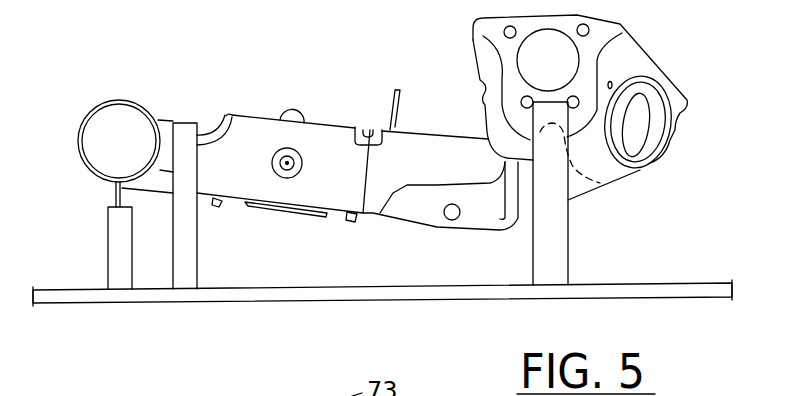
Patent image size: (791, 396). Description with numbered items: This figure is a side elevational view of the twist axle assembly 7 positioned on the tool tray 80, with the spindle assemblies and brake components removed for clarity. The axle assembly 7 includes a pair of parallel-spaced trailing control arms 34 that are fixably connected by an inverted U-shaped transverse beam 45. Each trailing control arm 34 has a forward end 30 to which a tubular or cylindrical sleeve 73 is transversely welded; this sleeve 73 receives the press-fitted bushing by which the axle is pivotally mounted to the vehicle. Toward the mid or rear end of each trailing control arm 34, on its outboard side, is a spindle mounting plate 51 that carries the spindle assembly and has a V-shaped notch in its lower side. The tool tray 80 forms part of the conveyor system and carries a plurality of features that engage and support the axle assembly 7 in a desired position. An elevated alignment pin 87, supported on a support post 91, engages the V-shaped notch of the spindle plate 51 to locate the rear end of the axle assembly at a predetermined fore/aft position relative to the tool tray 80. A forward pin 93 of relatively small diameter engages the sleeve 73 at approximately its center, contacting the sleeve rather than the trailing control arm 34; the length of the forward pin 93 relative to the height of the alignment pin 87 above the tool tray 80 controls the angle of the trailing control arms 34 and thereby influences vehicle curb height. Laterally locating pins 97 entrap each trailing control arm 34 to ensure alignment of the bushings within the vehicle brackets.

The twist axle 7 is at (272, 100).
The forward end 30 is at (163, 122).
The trailing control arm 34 is at (312, 198).
The transverse beam 45 is at (295, 120).
The spindle mounting plate 51 is at (605, 33).
The cylindrical sleeve 73 is at (117, 100).
The tool tray 80 is at (668, 283).
The alignment pin 87 is at (615, 188).
The support post 91 is at (567, 238).
The forward pin 93 is at (117, 192).
The laterally locating pin 97 is at (197, 240).